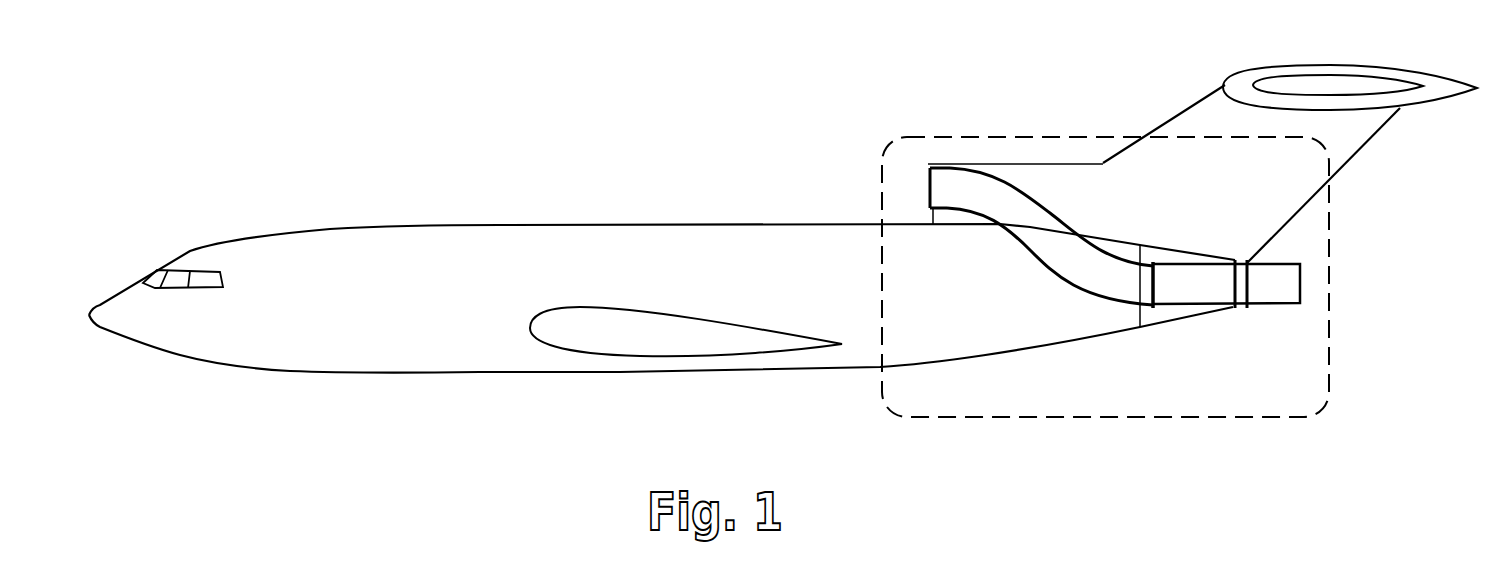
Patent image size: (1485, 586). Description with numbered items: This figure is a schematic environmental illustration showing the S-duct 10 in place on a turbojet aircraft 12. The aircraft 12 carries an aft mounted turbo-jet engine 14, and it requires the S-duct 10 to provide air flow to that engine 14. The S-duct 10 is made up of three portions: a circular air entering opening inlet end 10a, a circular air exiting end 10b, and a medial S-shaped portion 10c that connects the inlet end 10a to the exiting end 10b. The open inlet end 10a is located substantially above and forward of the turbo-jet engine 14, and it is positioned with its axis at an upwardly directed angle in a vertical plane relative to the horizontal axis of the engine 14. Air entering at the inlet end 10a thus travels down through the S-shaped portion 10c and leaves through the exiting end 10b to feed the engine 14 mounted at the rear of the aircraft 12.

The S-duct 10 is at (915, 120).
The circular air entering opening inlet end 10a is at (930, 177).
The circular air exiting end 10b is at (1153, 308).
The medial S-shaped portion 10c is at (1043, 270).
The turbojet aircraft 12 is at (675, 372).
The turbo-jet engine 14 is at (1210, 305).